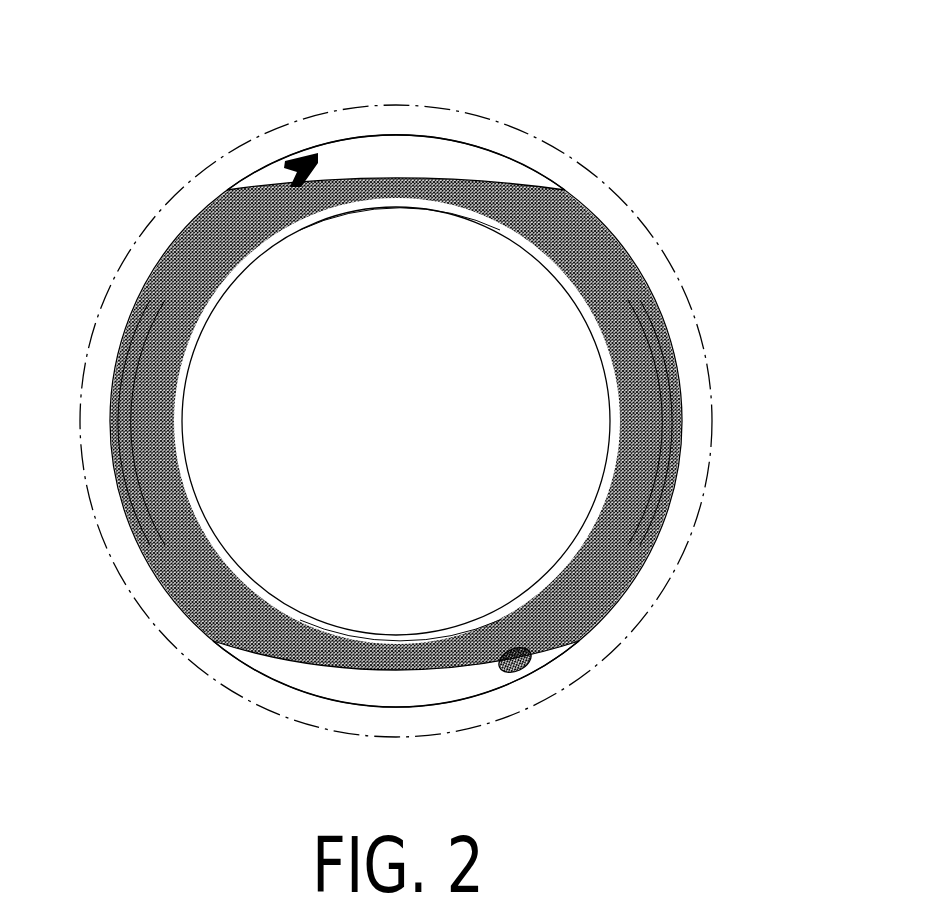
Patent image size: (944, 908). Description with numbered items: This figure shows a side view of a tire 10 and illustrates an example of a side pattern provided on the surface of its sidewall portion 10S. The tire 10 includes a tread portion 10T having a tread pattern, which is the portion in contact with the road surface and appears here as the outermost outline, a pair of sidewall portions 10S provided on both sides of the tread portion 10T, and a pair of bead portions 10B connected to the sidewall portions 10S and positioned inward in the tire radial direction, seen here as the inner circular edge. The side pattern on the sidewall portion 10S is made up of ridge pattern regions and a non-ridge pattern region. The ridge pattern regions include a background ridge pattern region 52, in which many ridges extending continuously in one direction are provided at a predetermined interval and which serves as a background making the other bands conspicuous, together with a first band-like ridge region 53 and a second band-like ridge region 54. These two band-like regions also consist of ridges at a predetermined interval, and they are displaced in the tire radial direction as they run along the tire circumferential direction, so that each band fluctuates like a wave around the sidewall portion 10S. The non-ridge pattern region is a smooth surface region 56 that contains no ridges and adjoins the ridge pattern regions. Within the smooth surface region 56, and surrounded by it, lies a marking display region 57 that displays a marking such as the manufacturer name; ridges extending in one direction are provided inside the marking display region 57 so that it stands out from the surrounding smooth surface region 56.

The tire 10 is at (595, 88).
The tread portion 10T is at (474, 107).
The sidewall portion 10S is at (543, 177).
The bead portion 10B is at (530, 255).
The background ridge pattern region 52 is at (178, 472).
The first band-like ridge region 53 is at (648, 303).
The second band-like ridge region 54 is at (611, 237).
The smooth surface region 56 is at (383, 132).
The marking display region 57 is at (401, 137).